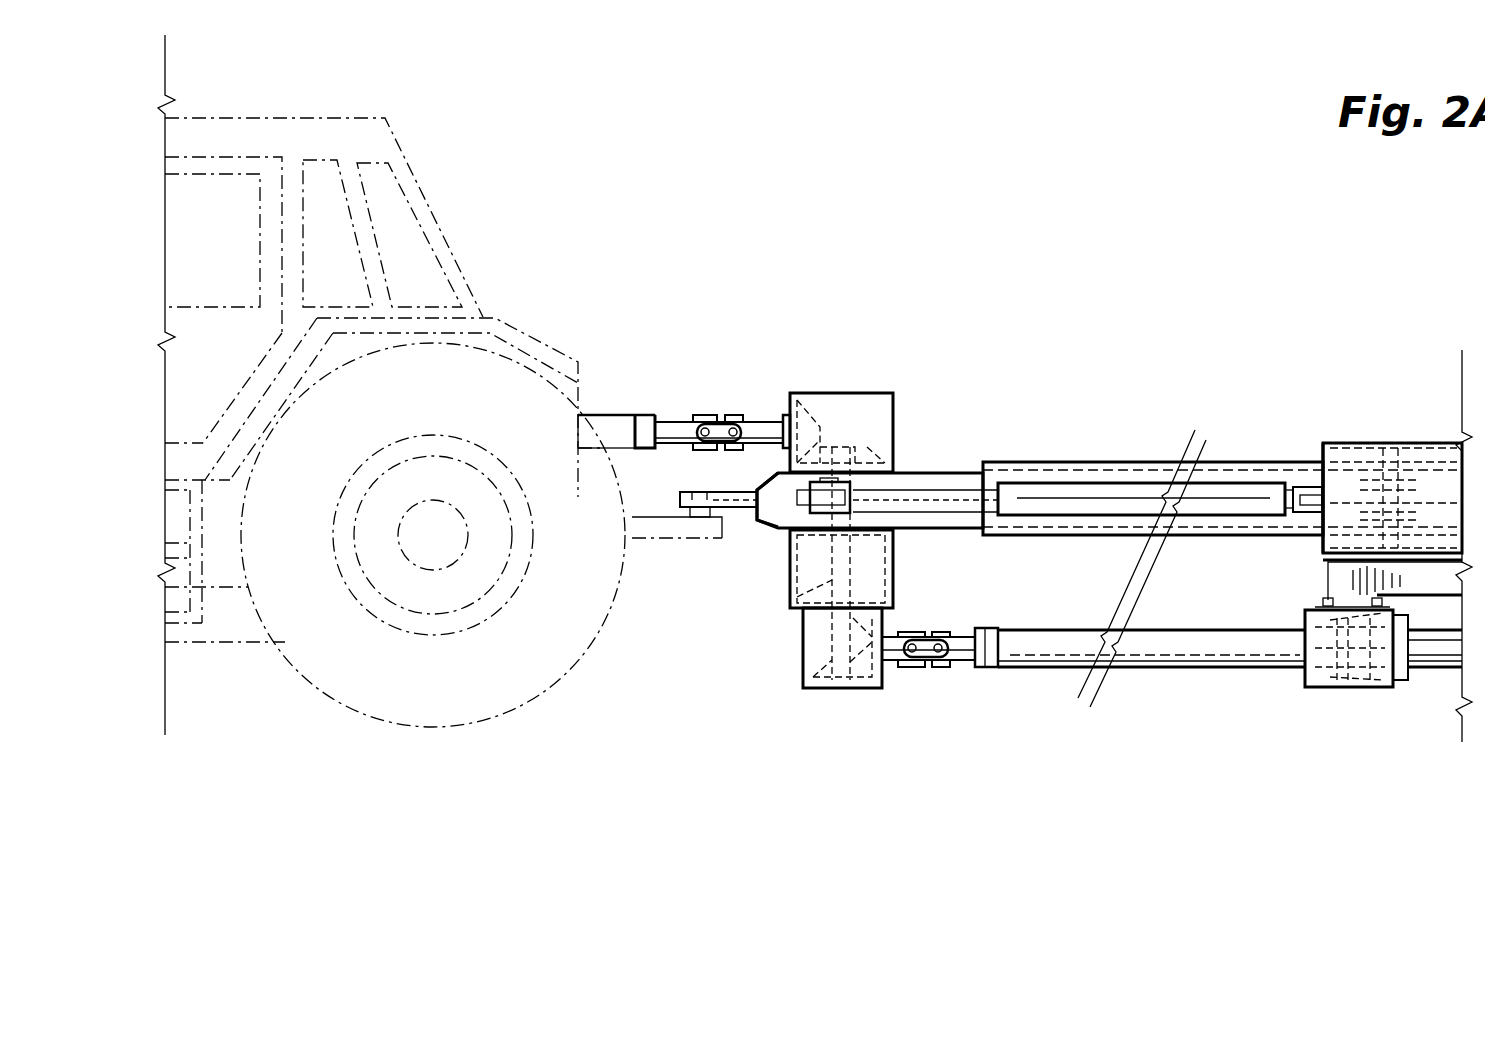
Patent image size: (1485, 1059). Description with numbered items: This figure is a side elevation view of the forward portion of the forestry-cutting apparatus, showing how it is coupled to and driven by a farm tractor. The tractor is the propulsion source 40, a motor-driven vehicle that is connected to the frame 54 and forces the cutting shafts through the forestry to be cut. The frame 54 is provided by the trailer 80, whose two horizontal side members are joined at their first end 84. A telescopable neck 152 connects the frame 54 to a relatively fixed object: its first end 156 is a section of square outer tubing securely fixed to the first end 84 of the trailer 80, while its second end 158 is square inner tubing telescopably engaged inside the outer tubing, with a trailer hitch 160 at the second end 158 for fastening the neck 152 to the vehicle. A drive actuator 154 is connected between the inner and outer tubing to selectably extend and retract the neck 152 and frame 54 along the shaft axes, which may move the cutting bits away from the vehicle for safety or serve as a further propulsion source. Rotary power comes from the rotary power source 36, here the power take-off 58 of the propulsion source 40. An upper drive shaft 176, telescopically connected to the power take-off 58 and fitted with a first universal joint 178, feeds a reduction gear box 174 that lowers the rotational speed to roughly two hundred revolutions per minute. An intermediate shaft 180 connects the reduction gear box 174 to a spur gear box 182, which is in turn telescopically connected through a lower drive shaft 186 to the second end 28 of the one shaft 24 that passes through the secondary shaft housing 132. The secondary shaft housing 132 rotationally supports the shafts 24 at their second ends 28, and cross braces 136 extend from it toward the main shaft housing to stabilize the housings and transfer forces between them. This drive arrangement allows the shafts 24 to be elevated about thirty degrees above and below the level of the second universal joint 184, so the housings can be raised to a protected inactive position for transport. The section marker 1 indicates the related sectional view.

The section view indicator 1 is at (278, 455).
The rotatable shaft 24 is at (1230, 676).
The second end 28 is at (1272, 657).
The rotary power source 36 is at (657, 378).
The propulsion source 40 is at (755, 694).
The frame 54 is at (1392, 444).
The power take-off 58 is at (618, 415).
The trailer 80 is at (1432, 458).
The first end 84 is at (1323, 455).
The secondary shaft housing 132 is at (1320, 677).
The cross brace 136 is at (1337, 580).
The telescopable neck 152 is at (965, 522).
The drive actuator 154 is at (1069, 506).
The first end 156 is at (1267, 477).
The second end 158 is at (780, 518).
The trailer hitch 160 is at (730, 493).
The reduction gear box 174 is at (867, 410).
The upper drive shaft 176 is at (670, 428).
The first universal joint 178 is at (723, 427).
The intermediate shaft 180 is at (827, 583).
The spur gear box 182 is at (813, 652).
The second universal joint 184 is at (910, 665).
The lower drive shaft 186 is at (958, 663).